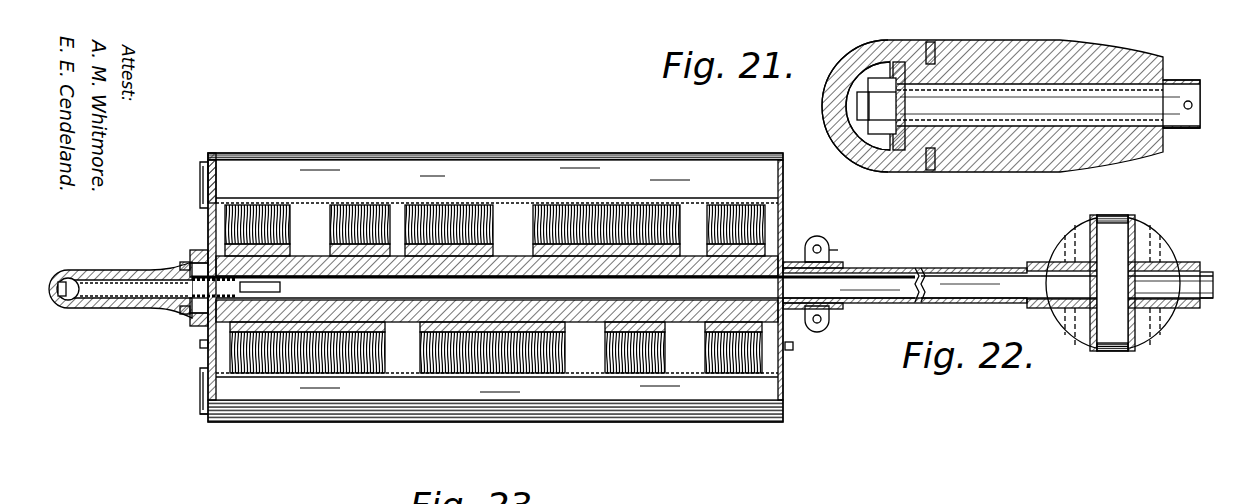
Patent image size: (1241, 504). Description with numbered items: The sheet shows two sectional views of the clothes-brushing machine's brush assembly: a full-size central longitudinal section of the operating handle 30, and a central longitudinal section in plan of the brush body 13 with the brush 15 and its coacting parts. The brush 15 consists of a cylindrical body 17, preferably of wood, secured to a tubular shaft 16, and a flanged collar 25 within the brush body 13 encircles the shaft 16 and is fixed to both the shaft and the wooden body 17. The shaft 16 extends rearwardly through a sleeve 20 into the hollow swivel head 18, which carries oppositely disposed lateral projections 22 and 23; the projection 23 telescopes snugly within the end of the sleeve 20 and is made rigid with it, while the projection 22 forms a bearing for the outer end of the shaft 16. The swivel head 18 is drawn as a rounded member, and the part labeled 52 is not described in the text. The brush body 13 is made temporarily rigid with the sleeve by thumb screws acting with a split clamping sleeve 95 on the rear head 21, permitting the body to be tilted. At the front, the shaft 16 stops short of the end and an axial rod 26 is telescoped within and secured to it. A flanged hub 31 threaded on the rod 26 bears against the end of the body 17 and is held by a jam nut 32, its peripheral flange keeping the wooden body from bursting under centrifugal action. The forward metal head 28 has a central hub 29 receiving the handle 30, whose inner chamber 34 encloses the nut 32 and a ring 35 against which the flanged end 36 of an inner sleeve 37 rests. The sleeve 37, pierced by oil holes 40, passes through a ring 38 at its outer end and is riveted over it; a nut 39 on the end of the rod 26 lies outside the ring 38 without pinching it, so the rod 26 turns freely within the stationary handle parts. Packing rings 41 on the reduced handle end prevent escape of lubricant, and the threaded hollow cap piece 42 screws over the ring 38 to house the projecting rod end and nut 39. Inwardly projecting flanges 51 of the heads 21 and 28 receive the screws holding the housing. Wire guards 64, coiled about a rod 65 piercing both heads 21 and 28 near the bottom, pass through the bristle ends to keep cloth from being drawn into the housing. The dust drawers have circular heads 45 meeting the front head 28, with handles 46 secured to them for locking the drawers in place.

In FIG. 22, the brush body 13 is at (560, 158).
In FIG. 22, the brush 15 is at (330, 226).
In FIG. 22, the shaft 16 is at (637, 285).
In FIG. 22, the cylindrical body 17 is at (502, 205).
In FIG. 22, the swivel head 18 is at (1143, 312).
In FIG. 22, the sleeve 20 is at (895, 268).
In FIG. 22, the head 21 is at (784, 190).
In FIG. 22, the lateral projection 22 is at (1195, 306).
In FIG. 22, the lateral projection 23 is at (1038, 262).
In FIG. 22, the flanged collar 25 is at (786, 240).
In FIG. 21, the axial rod 26 is at (1038, 105).
In FIG. 22, the axial rod 26 is at (135, 304).
In FIG. 22, the forward metal head 28 is at (214, 158).
In FIG. 22, the central hub 29 is at (199, 250).
In FIG. 21, the operating handle 30 is at (1011, 116).
In FIG. 22, the operating handle 30 is at (120, 297).
In FIG. 22, the flanged hub 31 is at (197, 324).
In FIG. 22, the jam nut 32 is at (194, 322).
In FIG. 22, the chamber 34 is at (192, 256).
In FIG. 22, the ring 35 is at (184, 266).
In FIG. 22, the flanged end 36 is at (176, 319).
In FIG. 21, the inner sleeve 37 is at (1192, 126).
In FIG. 22, the inner sleeve 37 is at (116, 270).
In FIG. 21, the ring 38 is at (905, 168).
In FIG. 22, the ring 38 is at (62, 306).
In FIG. 21, the nut 39 is at (876, 106).
In FIG. 21, the oil holes 40 is at (1085, 50).
In FIG. 22, the oil holes 40 is at (100, 270).
In FIG. 21, the packing rings 41 is at (933, 46).
In FIG. 22, the packing rings 41 is at (74, 307).
In FIG. 21, the cap piece 42 is at (818, 112).
In FIG. 22, the cap piece 42 is at (52, 274).
In FIG. 22, the circular heads 45 is at (205, 418).
In FIG. 22, the handles 46 is at (200, 180).
In FIG. 22, the inwardly projecting flanges 51 is at (226, 200).
In FIG. 22, the ball 52 is at (1165, 250).
In FIG. 22, the wire guards 64 is at (690, 210).
In FIG. 22, the rod 65 is at (186, 356).
In FIG. 22, the split clamping sleeve 95 is at (843, 251).